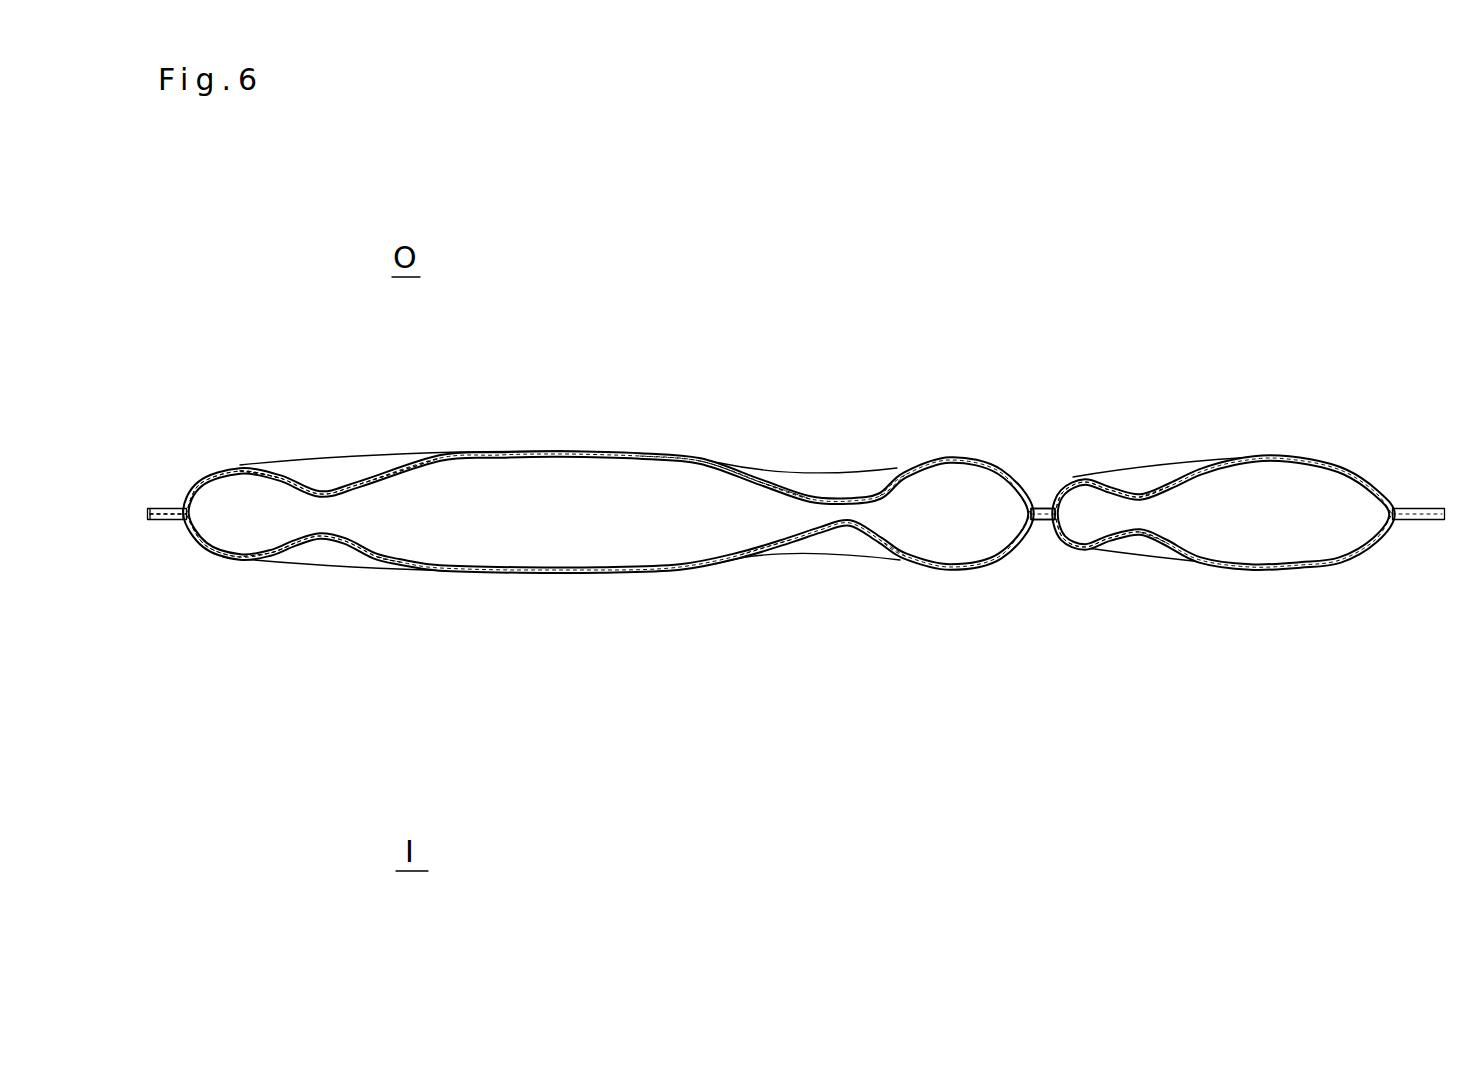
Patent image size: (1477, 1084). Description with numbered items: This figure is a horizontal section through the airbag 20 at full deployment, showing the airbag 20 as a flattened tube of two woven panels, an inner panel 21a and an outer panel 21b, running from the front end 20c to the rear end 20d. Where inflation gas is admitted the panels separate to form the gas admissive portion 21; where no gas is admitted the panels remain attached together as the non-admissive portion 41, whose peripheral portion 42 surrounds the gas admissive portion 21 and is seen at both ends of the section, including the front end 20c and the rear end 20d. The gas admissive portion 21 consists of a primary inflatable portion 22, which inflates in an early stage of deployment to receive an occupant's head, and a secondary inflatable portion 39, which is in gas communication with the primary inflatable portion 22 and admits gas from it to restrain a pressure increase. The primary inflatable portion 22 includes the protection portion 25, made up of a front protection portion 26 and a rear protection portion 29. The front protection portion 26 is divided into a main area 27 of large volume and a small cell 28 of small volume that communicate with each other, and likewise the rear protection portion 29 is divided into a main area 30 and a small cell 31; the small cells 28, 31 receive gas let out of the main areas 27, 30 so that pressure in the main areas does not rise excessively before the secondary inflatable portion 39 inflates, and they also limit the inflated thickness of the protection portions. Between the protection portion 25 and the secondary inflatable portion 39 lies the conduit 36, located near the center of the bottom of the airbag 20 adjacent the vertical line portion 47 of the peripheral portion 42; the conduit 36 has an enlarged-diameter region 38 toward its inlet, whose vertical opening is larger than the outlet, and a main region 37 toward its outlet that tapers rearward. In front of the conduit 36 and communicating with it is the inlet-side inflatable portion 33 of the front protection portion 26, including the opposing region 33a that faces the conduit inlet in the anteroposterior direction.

The airbag 20 is at (282, 302).
The front end 20c is at (155, 485).
The rear end 20d is at (1430, 450).
The gas admissive portion 21 is at (252, 533).
The inner panel 21a is at (217, 556).
The outer panel 21b is at (225, 468).
The primary inflatable portion 22 is at (705, 486).
The protection portion 25 is at (702, 538).
The front protection portion 26 is at (705, 599).
The main area 27 is at (525, 536).
The small cell 28 is at (273, 537).
The rear protection portion 29 is at (1223, 610).
The main area 30 is at (1272, 513).
The small cell 31 is at (1097, 513).
The inlet-side inflatable portion 33 is at (720, 583).
The opposing region 33a is at (760, 510).
The conduit 36 is at (822, 611).
The main region 37 is at (848, 512).
The enlarged-diameter region 38 is at (828, 512).
The secondary inflatable portion 39 is at (958, 518).
The non-admissive portion 41 is at (584, 600).
The peripheral portion 42 is at (181, 521).
The vertical line portion 47 is at (1042, 508).